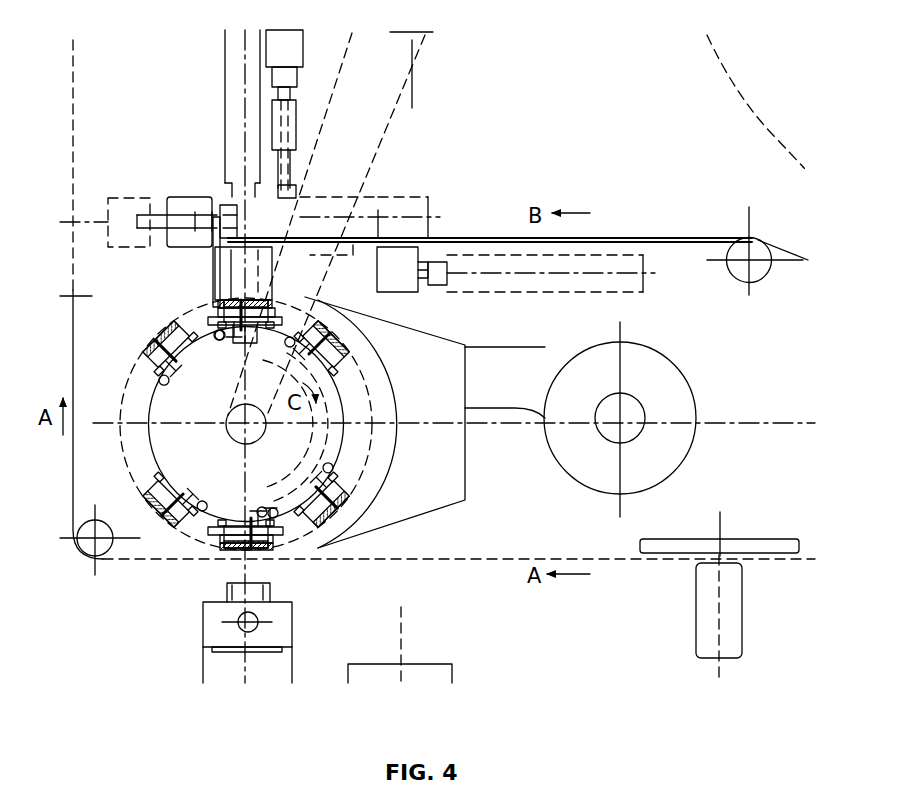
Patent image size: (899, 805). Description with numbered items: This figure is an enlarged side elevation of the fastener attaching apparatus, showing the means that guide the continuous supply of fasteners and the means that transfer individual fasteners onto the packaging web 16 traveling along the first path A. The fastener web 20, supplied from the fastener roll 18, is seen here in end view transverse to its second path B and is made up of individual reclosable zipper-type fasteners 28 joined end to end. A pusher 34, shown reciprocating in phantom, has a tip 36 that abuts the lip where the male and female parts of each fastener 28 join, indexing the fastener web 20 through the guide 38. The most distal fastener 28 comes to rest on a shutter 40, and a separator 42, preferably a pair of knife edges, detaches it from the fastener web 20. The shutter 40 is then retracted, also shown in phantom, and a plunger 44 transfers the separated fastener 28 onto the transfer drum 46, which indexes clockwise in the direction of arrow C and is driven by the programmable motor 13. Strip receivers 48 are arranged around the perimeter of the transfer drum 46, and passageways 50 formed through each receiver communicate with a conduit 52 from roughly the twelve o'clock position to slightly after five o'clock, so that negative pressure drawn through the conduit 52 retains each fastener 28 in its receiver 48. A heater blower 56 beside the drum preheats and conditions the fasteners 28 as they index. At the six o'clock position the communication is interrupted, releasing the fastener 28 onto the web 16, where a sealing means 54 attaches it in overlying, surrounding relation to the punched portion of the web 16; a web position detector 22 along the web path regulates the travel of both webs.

The programmable motor 13 is at (427, 32).
The web 16 is at (70, 312).
The fastener roll 18 is at (752, 118).
The fastener web 20 is at (783, 247).
The web position detector 22 is at (735, 614).
The reclosable zipper-type fasteners 28 is at (76, 284).
The pusher 34 is at (366, 192).
The tip 36 is at (395, 233).
The guide 38 is at (700, 232).
The shutter 40 is at (152, 250).
The separator 42 is at (292, 128).
The plunger 44 is at (228, 203).
The transfer drum 46 is at (138, 330).
The strip receivers 48 is at (143, 412).
The passageways 50 is at (225, 337).
The conduit 52 is at (302, 480).
The sealing means 54 is at (278, 604).
The heater blower 56 is at (527, 353).